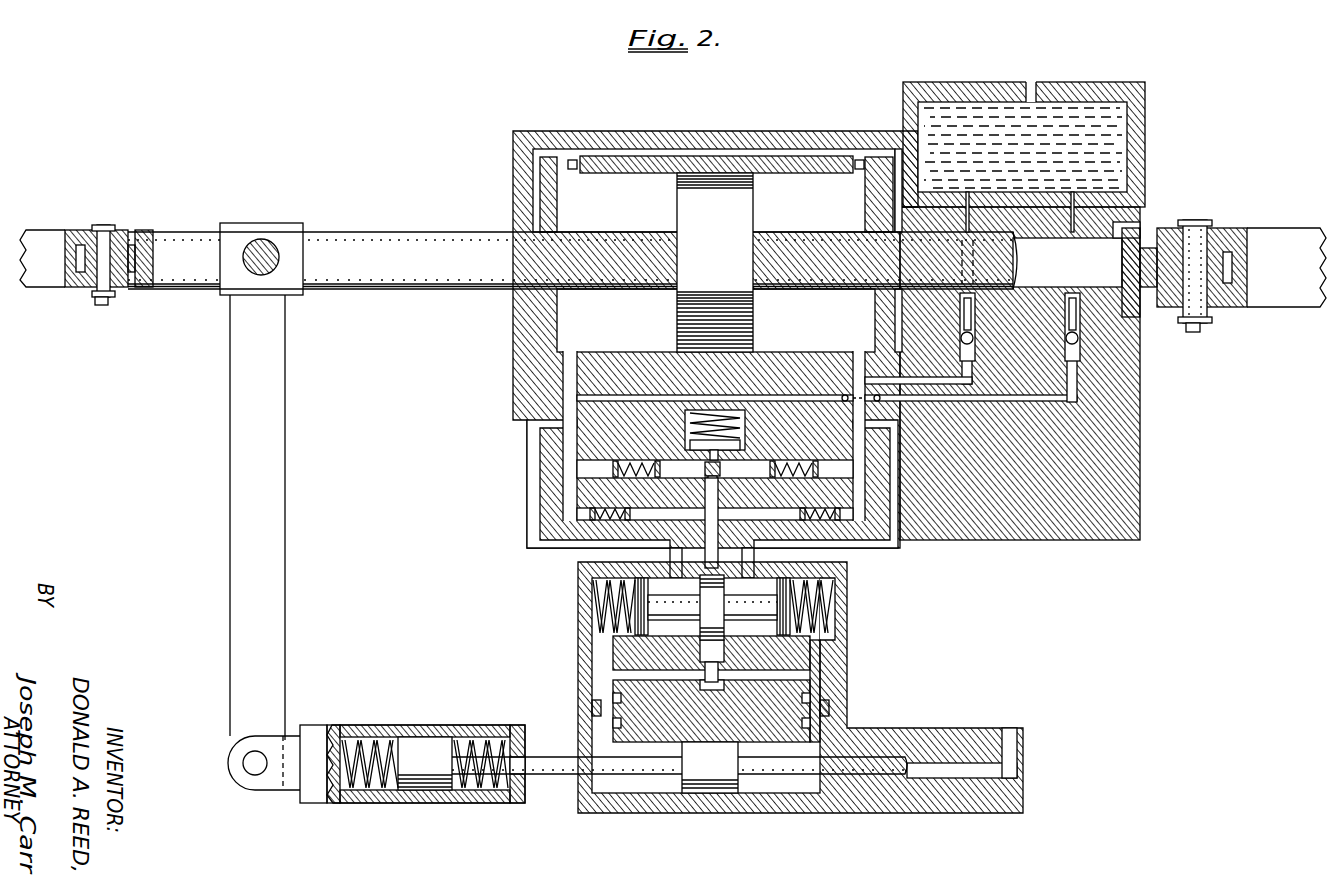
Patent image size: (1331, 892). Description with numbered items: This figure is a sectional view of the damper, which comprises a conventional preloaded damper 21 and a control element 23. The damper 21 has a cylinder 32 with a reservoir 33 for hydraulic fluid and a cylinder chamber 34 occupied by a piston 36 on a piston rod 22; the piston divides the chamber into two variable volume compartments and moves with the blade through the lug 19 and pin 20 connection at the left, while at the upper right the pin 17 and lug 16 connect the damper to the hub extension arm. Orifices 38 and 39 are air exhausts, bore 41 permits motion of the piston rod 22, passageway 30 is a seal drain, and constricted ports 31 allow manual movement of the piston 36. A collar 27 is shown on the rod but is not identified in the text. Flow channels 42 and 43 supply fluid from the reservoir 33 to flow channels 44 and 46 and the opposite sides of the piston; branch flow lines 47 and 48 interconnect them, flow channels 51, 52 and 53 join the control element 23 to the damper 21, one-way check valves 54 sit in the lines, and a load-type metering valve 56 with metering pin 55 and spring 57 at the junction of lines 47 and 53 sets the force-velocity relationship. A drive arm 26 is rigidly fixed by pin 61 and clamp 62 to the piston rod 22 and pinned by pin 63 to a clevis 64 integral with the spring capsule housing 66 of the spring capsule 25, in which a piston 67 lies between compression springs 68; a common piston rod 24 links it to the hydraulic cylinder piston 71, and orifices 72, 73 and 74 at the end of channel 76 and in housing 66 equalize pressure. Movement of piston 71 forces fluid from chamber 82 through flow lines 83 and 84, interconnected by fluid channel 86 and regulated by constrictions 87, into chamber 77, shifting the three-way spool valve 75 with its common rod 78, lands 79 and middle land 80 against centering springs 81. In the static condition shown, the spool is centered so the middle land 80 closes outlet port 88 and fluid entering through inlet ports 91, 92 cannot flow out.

The lug 16 is at (1290, 232).
The pin 17 is at (1195, 232).
The lug 19 is at (40, 230).
The pin 20 is at (105, 228).
The conventional damper 21 is at (735, 128).
The piston rod 22 is at (410, 290).
The control element 23 is at (792, 818).
The common piston rod 24 is at (553, 776).
The spring capsule 25 is at (425, 795).
The drive arm 26 is at (232, 483).
The collar 27 is at (247, 220).
The passageway 30 is at (787, 156).
The constricted ports 31 is at (573, 158).
The cylinder 32 is at (680, 132).
The reservoir 33 is at (1037, 153).
The cylinder chamber 34 is at (638, 221).
The piston 36 is at (740, 212).
The orifice 38 is at (1031, 82).
The orifice 39 is at (1130, 225).
The bore 41 is at (1059, 273).
The flow channel 42 is at (1078, 322).
The flow channel 43 is at (960, 322).
The flow channel 44 is at (573, 350).
The flow channel 46 is at (857, 350).
The branch flow line 47 is at (673, 461).
The branch flow line 48 is at (670, 508).
The flow channel 51 is at (898, 470).
The flow channel 52 is at (527, 476).
The flow channel 53 is at (720, 510).
The one-way check valves 54 is at (628, 462).
The metering pin 55 is at (722, 468).
The load-type metering valve 56 is at (745, 420).
The spring 57 is at (686, 420).
The pin 61 is at (270, 245).
The clamp 62 is at (232, 292).
The pin 63 is at (243, 763).
The clevis 64 is at (282, 792).
The spring capsule housing 66 is at (460, 740).
The piston 67 is at (425, 738).
The compression springs 68 is at (372, 790).
The hydraulic cylinder piston 71 is at (706, 796).
The orifice 72 is at (1020, 745).
The orifice 73 is at (514, 726).
The orifice 74 is at (345, 726).
The three-way spool valve 75 is at (730, 616).
The channel 76 is at (975, 780).
The chamber 77 is at (769, 599).
The common rod 78 is at (678, 604).
The lands 79 is at (711, 624).
The middle land 80 is at (703, 620).
The centering springs 81 is at (598, 600).
The chamber 82 is at (648, 793).
The flow line 83 is at (822, 652).
The flow line 84 is at (592, 660).
The fluid channel 86 is at (670, 684).
The constrictions 87 is at (718, 686).
The outlet port 88 is at (725, 646).
The inlet port 91 is at (697, 549).
The inlet port 92 is at (733, 549).